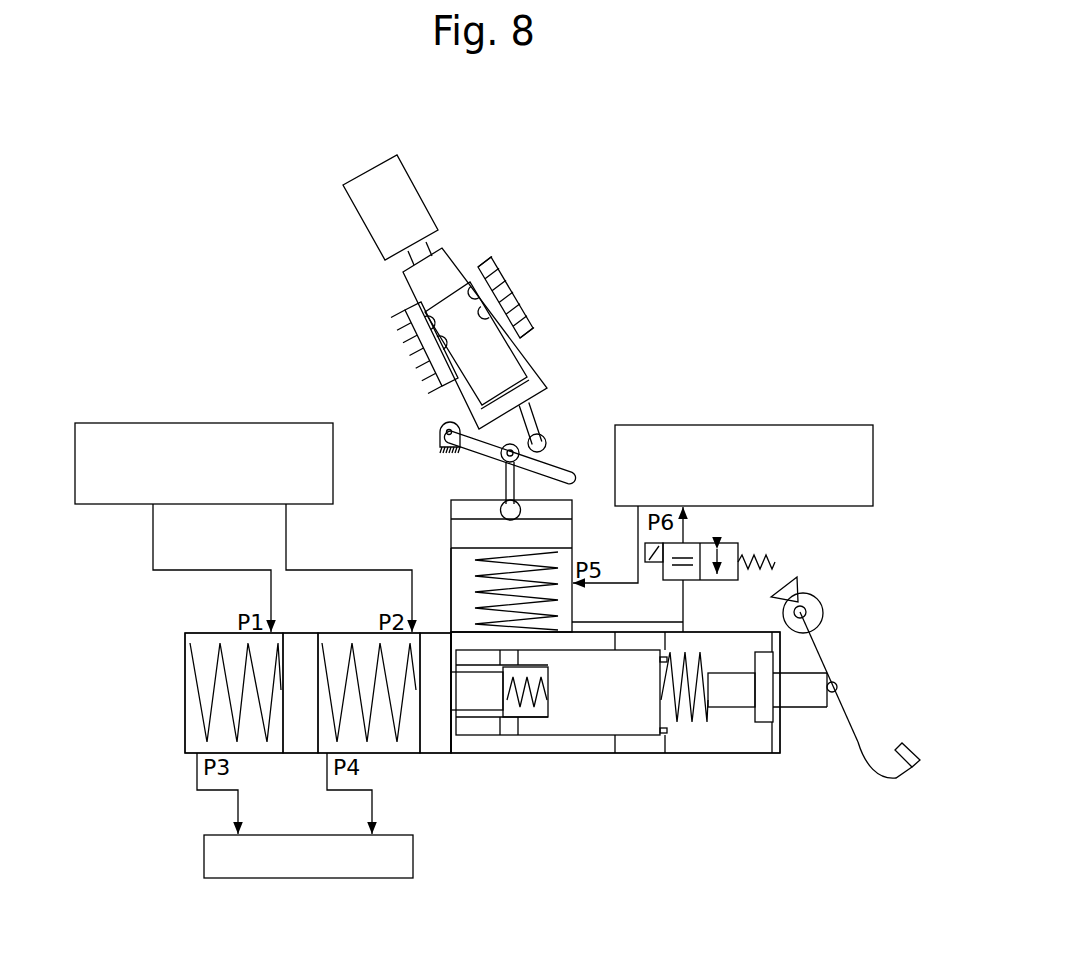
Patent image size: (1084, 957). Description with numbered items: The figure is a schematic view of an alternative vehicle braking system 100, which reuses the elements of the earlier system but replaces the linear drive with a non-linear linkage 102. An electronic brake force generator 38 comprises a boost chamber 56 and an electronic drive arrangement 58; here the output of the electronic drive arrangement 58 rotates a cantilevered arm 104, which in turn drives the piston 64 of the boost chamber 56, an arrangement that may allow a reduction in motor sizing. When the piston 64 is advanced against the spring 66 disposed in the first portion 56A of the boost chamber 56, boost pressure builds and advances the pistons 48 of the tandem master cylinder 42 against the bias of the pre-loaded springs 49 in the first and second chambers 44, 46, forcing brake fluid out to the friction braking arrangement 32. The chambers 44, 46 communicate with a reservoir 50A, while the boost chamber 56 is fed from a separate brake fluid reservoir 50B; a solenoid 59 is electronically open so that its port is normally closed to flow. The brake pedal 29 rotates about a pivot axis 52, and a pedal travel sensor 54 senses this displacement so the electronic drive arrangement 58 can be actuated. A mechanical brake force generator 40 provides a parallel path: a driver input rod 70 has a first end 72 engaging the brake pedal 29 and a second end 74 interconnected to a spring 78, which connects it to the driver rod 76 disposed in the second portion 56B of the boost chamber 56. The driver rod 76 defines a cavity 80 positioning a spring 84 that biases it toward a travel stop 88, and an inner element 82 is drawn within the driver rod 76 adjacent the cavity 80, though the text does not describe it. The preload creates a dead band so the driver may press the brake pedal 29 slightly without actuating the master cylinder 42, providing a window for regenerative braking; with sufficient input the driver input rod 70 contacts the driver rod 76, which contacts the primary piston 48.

The braking system 100 is at (677, 289).
The electronic drive arrangement 58 is at (379, 306).
The non-linear linkage 102 is at (387, 409).
The cantilevered arm 104 is at (565, 467).
The reservoir 50A is at (198, 423).
The brake fluid reservoir 50B is at (807, 425).
The friction braking arrangement 32 is at (204, 857).
The master cylinder 42 is at (196, 626).
The first chamber 44 is at (193, 742).
The second chamber 46 is at (407, 742).
The piston 48 is at (296, 742).
The pre-loaded spring 49 is at (337, 637).
The electronic brake force generator 38 is at (421, 521).
The piston 64 is at (560, 537).
The spring 66 is at (500, 590).
The boost chamber 56 is at (461, 596).
The first portion of the boost chamber 56A is at (460, 622).
The second portion of the boost chamber 56B is at (557, 740).
The mechanical brake force generator 40 is at (713, 766).
The driver rod 76 is at (602, 735).
The inner sleeve 82 is at (472, 698).
The cavity 80 is at (530, 717).
The spring 84 is at (535, 668).
The travel stop 88 is at (665, 733).
The spring 78 is at (692, 713).
The second end 74 is at (727, 687).
The driver input rod 70 is at (809, 711).
The solenoid 59 is at (700, 543).
The pedal travel sensor 54 is at (827, 610).
The pivot axis 52 is at (800, 598).
The first end 72 is at (813, 682).
The brake pedal 29 is at (858, 730).